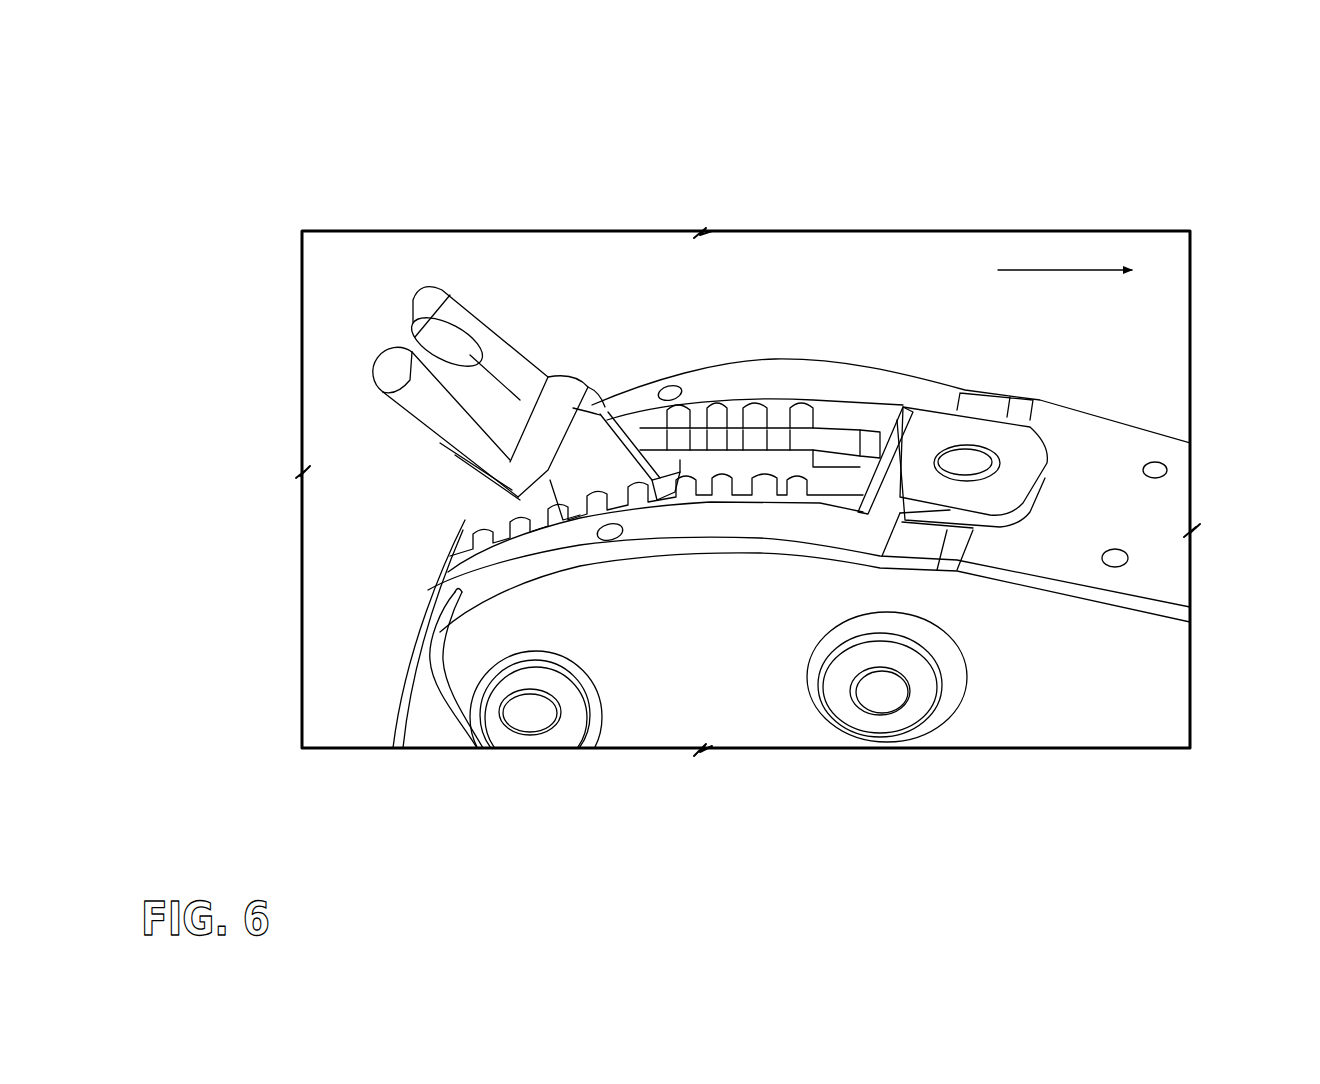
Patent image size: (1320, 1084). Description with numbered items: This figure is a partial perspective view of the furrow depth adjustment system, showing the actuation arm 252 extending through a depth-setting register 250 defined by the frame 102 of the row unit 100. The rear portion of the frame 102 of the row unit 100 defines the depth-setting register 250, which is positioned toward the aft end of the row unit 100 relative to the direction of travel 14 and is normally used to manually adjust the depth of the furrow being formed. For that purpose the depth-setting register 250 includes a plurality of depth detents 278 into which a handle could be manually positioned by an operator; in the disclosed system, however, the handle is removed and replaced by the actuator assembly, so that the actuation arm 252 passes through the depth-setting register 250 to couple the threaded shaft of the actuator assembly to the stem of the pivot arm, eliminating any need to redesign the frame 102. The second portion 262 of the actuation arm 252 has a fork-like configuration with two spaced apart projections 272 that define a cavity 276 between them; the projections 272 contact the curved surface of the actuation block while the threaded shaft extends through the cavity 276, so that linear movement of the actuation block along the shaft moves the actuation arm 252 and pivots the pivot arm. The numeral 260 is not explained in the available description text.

The row unit 100 is at (308, 173).
The direction of travel 14 is at (1050, 270).
The frame 102 is at (1062, 422).
The depth-setting register 250 is at (720, 466).
The actuation arm 252 is at (594, 350).
The block 260 is at (598, 455).
The second portion 262 is at (536, 340).
The first projection 272 is at (463, 313).
The cavity 276 is at (397, 337).
The depth detents 278 is at (798, 480).